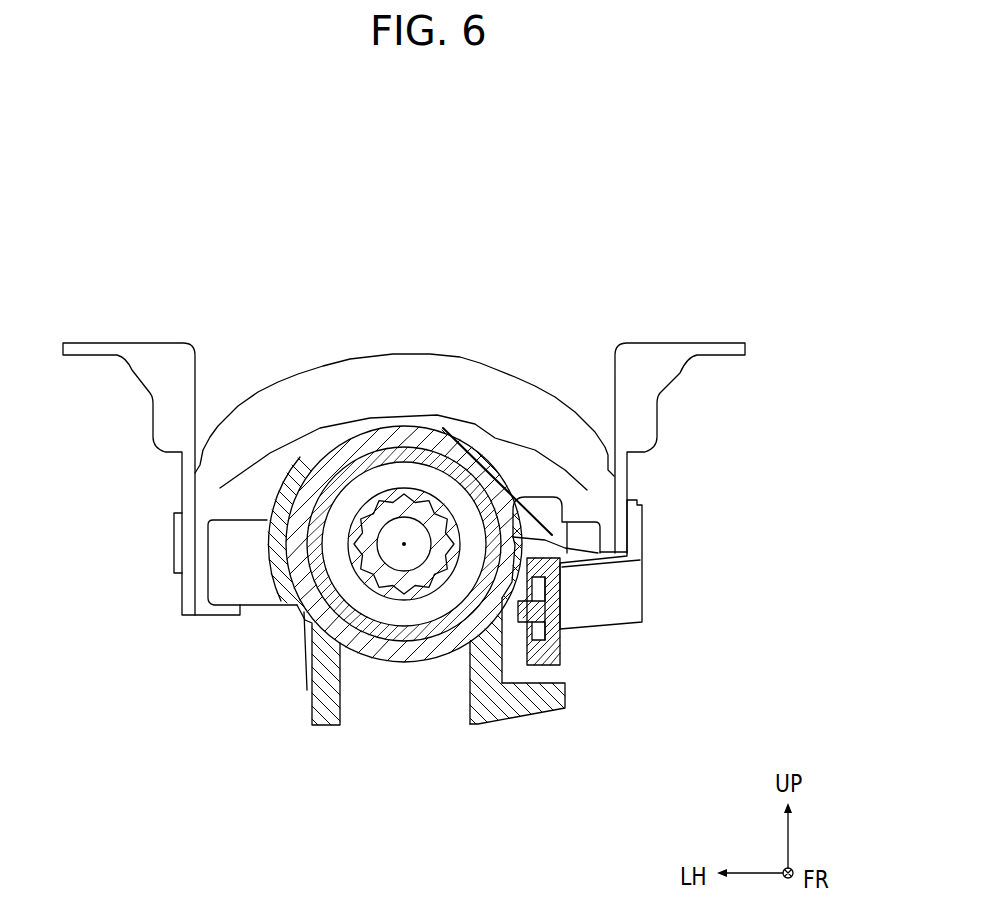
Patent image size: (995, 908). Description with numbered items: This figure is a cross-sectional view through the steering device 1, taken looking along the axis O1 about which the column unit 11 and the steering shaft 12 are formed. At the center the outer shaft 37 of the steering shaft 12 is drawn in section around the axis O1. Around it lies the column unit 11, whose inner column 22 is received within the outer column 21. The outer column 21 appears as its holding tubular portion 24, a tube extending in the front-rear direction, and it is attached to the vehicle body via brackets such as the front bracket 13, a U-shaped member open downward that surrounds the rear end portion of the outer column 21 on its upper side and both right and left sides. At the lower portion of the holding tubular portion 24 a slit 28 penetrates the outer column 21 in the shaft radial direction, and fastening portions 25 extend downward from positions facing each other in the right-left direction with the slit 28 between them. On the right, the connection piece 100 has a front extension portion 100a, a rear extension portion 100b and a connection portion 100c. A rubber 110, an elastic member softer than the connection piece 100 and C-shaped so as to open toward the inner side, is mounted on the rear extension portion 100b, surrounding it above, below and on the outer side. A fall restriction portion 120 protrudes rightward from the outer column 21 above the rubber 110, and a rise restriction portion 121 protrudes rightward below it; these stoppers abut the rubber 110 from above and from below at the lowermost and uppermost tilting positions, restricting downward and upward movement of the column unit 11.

The steering device 1 is at (719, 226).
The column unit 11 is at (457, 233).
The inner column 22 is at (365, 440).
The outer column 21 is at (410, 414).
The holding tubular portion 24 is at (490, 455).
The front bracket 13 is at (641, 353).
The fall restriction portion 120 is at (566, 521).
The front extension portion 100a is at (643, 535).
The connection portion 100c is at (614, 582).
The axis O1 is at (404, 544).
The connection piece 100 is at (560, 637).
The rear extension portion 100b is at (560, 603).
The rubber 110 is at (560, 637).
The outer shaft 37 is at (410, 597).
The steering shaft 12 is at (404, 544).
The slit 28 is at (470, 620).
The fastening portions 25 is at (320, 703).
The rise restriction portion 121 is at (530, 700).